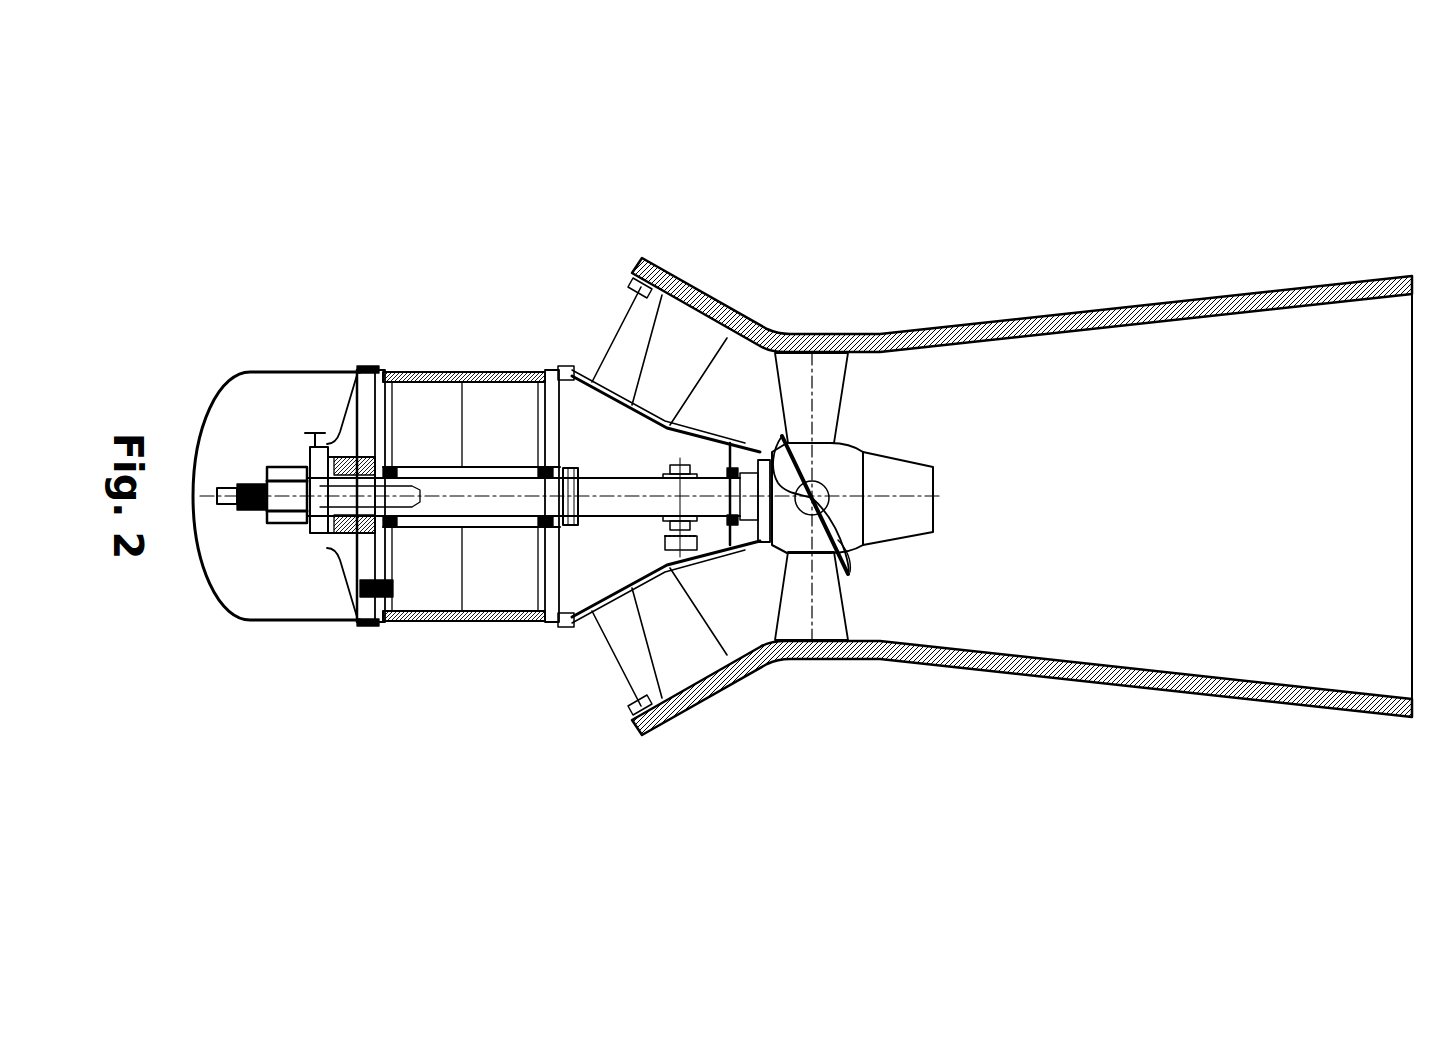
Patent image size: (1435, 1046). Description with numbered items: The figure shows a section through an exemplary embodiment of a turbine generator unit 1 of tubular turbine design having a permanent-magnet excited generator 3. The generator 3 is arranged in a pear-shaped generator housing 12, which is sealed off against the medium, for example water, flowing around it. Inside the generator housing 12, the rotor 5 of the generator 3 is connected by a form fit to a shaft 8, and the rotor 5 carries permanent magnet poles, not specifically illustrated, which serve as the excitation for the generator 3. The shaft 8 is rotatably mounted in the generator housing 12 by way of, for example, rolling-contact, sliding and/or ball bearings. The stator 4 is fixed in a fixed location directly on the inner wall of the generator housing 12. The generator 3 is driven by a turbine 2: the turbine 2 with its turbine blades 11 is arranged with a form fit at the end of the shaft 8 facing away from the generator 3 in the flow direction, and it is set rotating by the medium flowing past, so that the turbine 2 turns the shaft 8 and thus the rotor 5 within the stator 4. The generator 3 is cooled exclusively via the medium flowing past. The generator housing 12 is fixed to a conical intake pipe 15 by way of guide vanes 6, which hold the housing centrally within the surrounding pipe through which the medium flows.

The turbine generator unit 1 is at (985, 462).
The turbine 2 is at (874, 435).
The generator 3 is at (467, 473).
The stator 4 is at (433, 625).
The rotor 5 is at (475, 417).
The guide vanes 6 is at (683, 645).
The shaft 8 is at (600, 503).
The turbine blades 11 is at (848, 553).
The generator housing 12 is at (310, 372).
The conical intake pipe 15 is at (1030, 316).